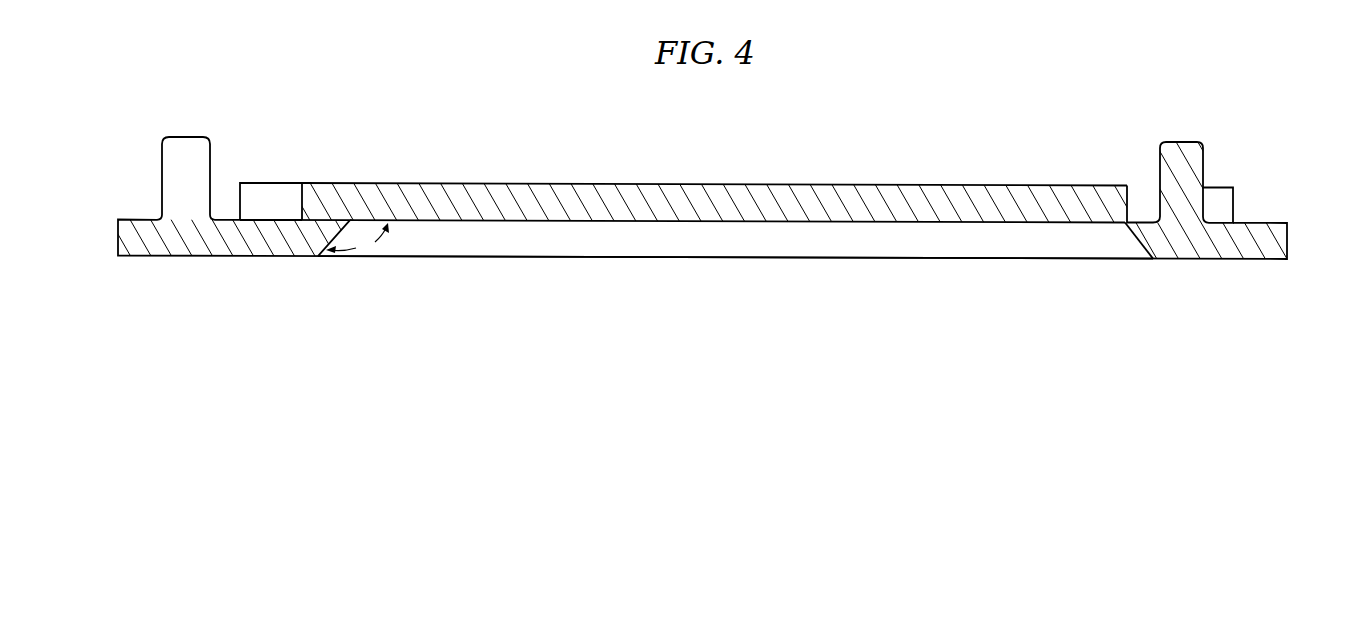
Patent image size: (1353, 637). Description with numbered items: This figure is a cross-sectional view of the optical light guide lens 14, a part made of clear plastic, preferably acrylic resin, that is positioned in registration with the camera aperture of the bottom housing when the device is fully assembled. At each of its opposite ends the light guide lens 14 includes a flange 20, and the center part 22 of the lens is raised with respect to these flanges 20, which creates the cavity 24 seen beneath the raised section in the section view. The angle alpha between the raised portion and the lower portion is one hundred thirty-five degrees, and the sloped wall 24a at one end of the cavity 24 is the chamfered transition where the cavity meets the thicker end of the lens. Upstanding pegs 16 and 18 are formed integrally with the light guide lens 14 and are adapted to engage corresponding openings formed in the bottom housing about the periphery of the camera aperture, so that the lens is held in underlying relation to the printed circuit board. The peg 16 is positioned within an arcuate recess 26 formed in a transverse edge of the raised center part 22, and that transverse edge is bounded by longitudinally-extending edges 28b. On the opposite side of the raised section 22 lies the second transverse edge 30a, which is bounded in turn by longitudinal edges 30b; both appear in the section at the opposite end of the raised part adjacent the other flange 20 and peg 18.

The light guide lens 14 is at (136, 102).
The upstanding peg 16 is at (1163, 142).
The upstanding peg 18 is at (207, 137).
The flange 20 is at (141, 218).
The center part 22 is at (703, 185).
The cavity 24 is at (562, 231).
The chamfered channel wall 24a is at (1138, 244).
The arcuate recess 26 is at (1137, 197).
The longitudinally-extending edge 28b is at (1213, 197).
The second transverse edge 30a is at (300, 197).
The longitudinal edge 30b is at (258, 207).